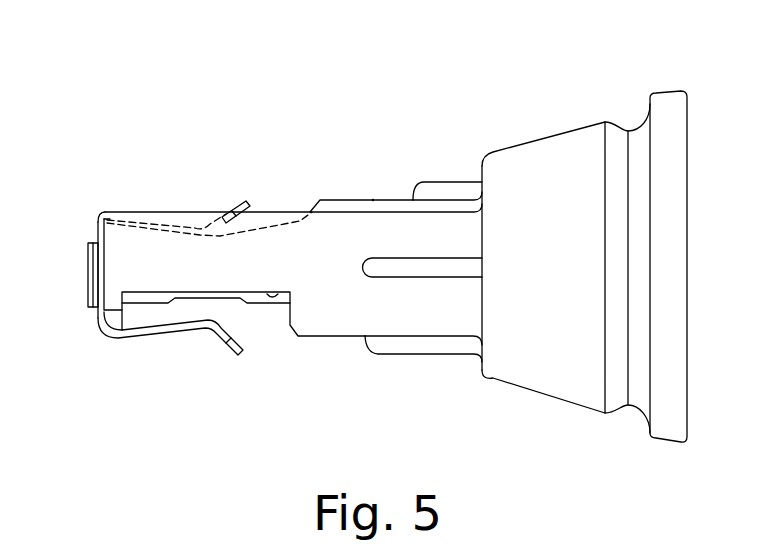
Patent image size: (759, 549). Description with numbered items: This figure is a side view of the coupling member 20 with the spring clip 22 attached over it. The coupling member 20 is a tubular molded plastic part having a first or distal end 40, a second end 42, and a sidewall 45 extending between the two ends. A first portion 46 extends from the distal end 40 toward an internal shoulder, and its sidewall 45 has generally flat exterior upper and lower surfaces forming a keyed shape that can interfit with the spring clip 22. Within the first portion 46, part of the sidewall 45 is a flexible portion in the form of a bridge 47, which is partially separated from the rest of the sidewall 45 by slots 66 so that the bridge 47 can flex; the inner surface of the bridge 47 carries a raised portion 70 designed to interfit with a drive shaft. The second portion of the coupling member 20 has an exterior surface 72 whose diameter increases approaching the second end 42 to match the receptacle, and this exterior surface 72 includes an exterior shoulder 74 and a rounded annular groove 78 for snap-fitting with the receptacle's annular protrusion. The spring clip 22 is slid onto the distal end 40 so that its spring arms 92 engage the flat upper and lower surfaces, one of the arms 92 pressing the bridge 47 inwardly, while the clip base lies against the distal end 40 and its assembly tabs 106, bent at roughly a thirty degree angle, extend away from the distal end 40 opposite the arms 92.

The coupling member 20 is at (300, 112).
The spring clip 22 is at (102, 338).
The first or distal end 40 is at (102, 222).
The second end 42 is at (687, 128).
The sidewall 45 is at (398, 215).
The first portion 46 is at (148, 268).
The flexible portion (bridge) 47 is at (247, 315).
The slots 66 is at (271, 296).
The raised portion 70 is at (200, 298).
The exterior surface 72 is at (545, 170).
The exterior shoulder 74 is at (483, 182).
The annular groove 78 is at (638, 132).
The spring arms 92 is at (157, 335).
The assembly tabs 106 is at (88, 273).